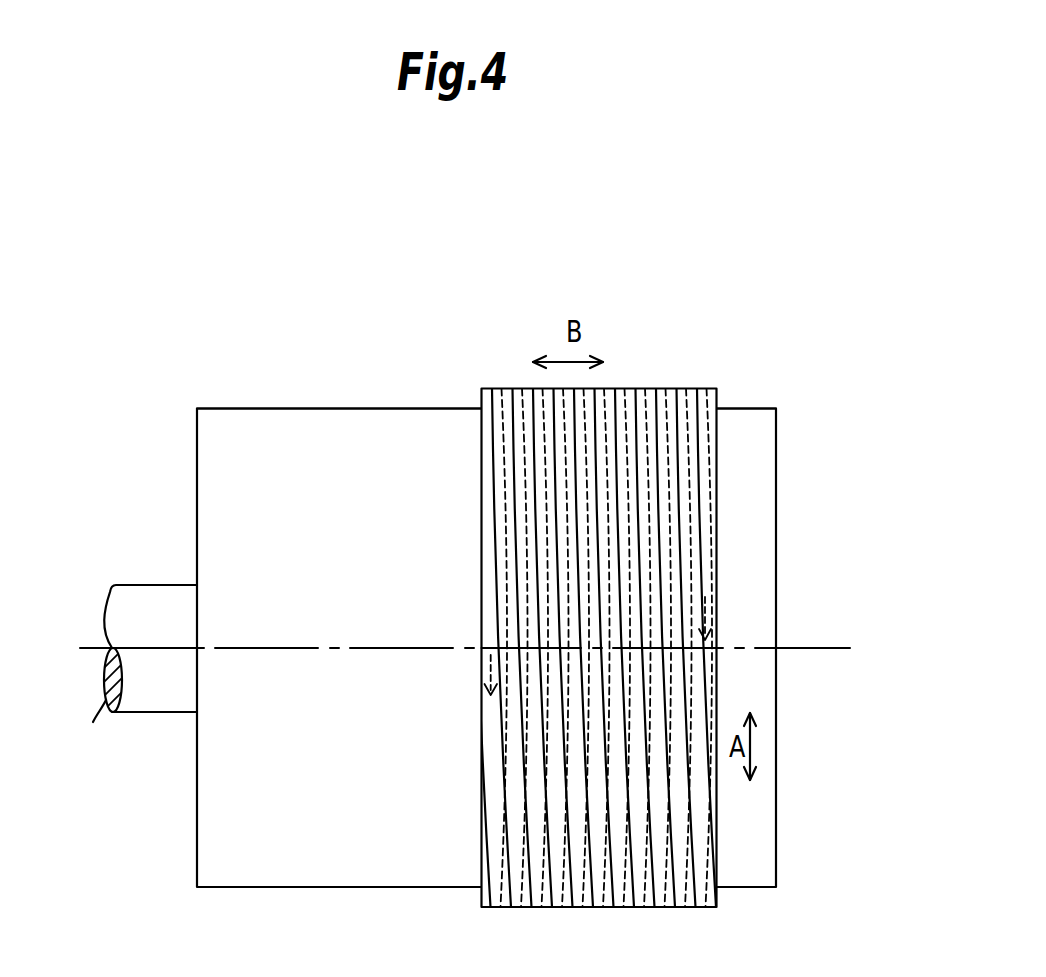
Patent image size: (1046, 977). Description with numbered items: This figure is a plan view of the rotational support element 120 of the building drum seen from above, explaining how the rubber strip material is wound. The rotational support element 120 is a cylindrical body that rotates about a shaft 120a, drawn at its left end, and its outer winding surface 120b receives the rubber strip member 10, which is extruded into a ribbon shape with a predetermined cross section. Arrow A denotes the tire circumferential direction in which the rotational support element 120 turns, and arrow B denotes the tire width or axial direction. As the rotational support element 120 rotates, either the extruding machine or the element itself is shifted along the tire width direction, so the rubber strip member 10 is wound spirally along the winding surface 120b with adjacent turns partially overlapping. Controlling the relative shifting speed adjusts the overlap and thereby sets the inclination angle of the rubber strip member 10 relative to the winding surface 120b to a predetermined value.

The rubber strip member 10 is at (668, 399).
The rotational support element 120 is at (266, 386).
The shaft 120a is at (95, 704).
The winding surface 120b is at (335, 432).